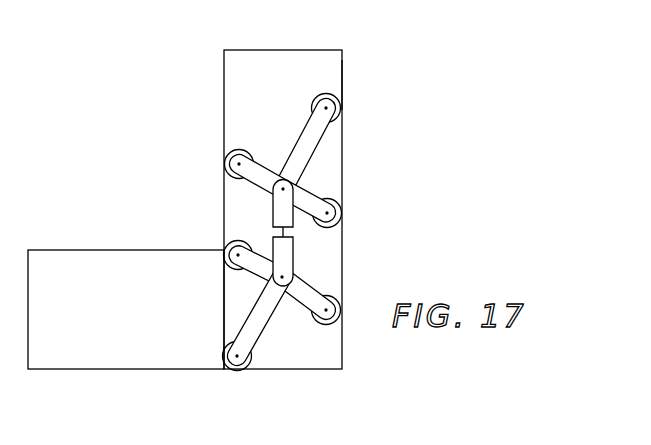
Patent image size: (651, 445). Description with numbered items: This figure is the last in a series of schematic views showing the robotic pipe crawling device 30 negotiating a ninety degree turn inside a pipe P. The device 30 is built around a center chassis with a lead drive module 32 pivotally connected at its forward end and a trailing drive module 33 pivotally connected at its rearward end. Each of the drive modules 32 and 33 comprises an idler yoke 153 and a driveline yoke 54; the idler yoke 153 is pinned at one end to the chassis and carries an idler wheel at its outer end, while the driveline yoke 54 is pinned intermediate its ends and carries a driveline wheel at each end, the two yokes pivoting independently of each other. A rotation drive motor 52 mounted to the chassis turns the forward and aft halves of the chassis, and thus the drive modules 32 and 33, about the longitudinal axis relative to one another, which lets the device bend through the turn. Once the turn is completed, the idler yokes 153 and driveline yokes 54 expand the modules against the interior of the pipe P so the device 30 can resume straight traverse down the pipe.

The robotic pipe crawling device 30 is at (180, 292).
The lead drive module 32 is at (252, 120).
The trailing drive module 33 is at (204, 348).
The rotation drive motor 52 is at (312, 137).
The driveline yoke 54 is at (253, 181).
The idler yoke 153 is at (249, 275).
The pipe P is at (342, 82).